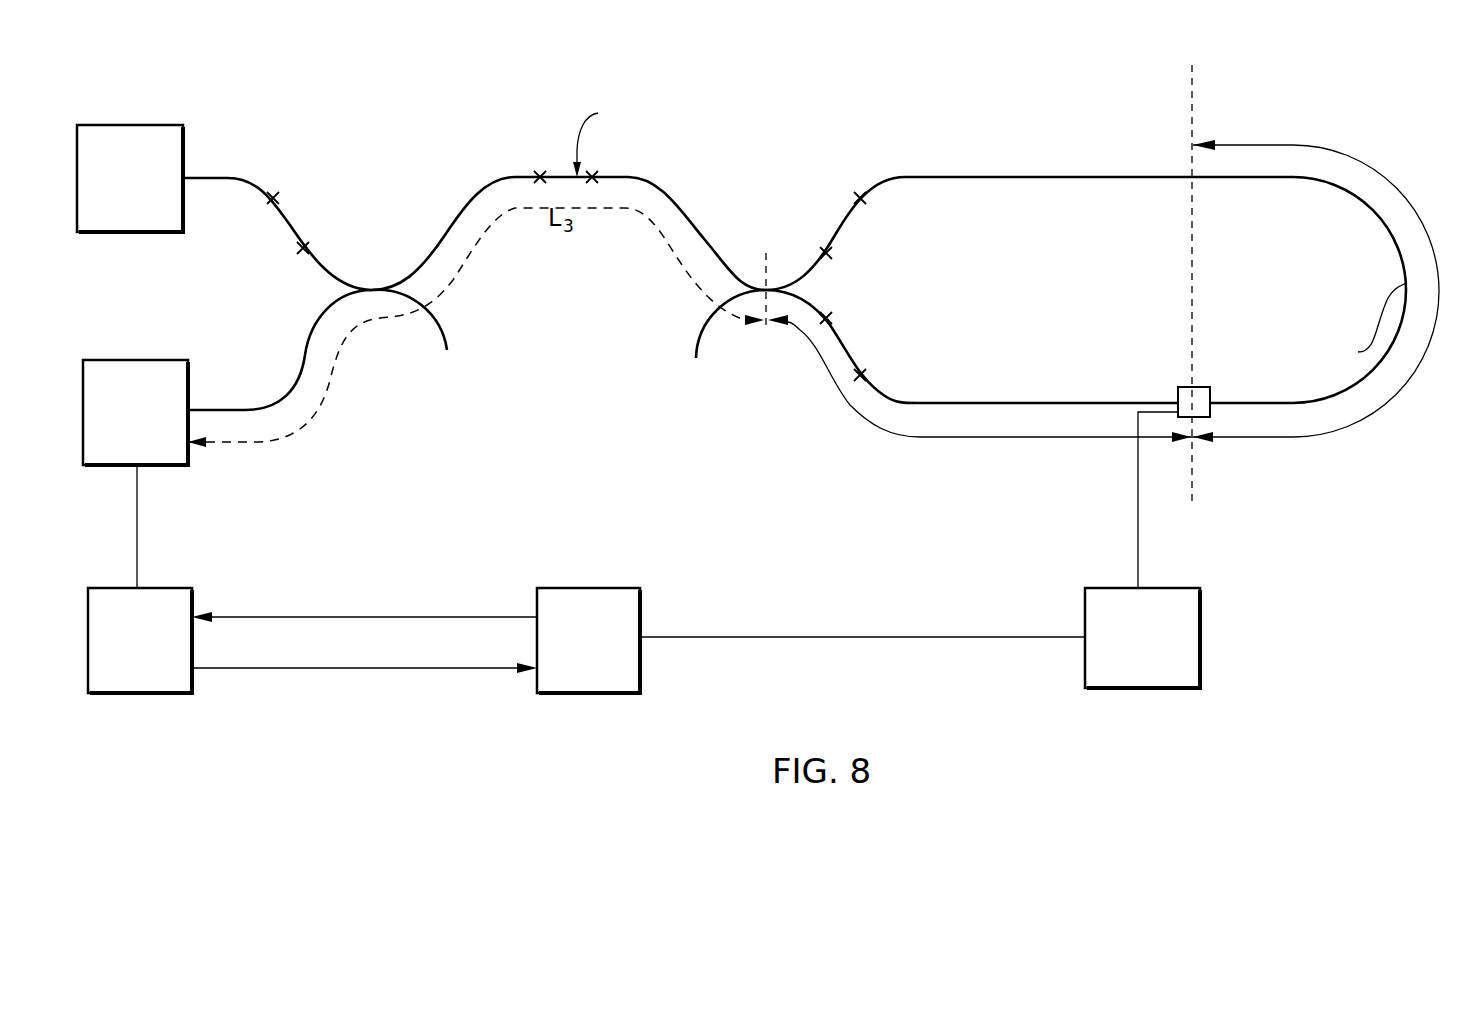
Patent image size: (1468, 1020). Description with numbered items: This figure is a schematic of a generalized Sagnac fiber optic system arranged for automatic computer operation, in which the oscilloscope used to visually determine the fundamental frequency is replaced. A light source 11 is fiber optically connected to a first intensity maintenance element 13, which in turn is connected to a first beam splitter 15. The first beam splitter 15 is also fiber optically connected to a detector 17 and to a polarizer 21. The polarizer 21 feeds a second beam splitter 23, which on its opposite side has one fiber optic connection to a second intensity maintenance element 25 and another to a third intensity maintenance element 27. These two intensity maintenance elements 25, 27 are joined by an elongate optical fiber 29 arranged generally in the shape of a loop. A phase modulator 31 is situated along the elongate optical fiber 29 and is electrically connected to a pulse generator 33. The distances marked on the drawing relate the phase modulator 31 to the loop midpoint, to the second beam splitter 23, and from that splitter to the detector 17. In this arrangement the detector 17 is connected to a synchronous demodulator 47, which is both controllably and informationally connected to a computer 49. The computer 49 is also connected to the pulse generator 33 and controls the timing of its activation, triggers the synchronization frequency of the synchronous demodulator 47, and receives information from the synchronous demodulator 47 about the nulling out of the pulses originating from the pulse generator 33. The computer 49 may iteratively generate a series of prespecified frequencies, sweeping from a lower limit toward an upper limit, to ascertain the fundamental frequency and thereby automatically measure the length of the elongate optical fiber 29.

The light source 11 is at (142, 193).
The first intensity maintenance element 13 is at (290, 218).
The first beam splitter 15 is at (372, 292).
The detector 17 is at (148, 425).
The polarizer 21 is at (563, 175).
The second beam splitter 23 is at (712, 315).
The second intensity maintenance element 25 is at (838, 228).
The third intensity maintenance element 27 is at (845, 350).
The elongate optical fiber 29 is at (1395, 243).
The phase modulator 31 is at (1178, 388).
The pulse generator 33 is at (1157, 647).
The synchronous demodulator 47 is at (152, 655).
The computer 49 is at (602, 652).